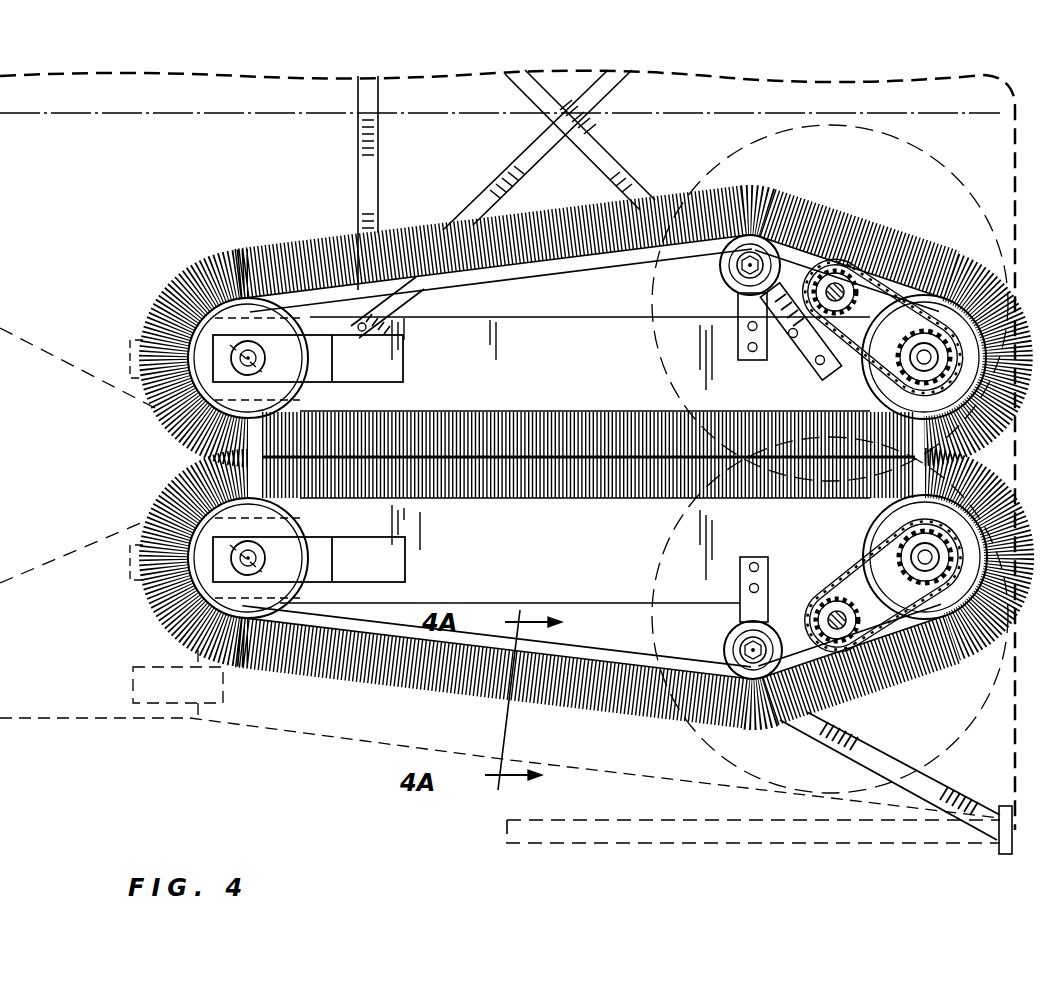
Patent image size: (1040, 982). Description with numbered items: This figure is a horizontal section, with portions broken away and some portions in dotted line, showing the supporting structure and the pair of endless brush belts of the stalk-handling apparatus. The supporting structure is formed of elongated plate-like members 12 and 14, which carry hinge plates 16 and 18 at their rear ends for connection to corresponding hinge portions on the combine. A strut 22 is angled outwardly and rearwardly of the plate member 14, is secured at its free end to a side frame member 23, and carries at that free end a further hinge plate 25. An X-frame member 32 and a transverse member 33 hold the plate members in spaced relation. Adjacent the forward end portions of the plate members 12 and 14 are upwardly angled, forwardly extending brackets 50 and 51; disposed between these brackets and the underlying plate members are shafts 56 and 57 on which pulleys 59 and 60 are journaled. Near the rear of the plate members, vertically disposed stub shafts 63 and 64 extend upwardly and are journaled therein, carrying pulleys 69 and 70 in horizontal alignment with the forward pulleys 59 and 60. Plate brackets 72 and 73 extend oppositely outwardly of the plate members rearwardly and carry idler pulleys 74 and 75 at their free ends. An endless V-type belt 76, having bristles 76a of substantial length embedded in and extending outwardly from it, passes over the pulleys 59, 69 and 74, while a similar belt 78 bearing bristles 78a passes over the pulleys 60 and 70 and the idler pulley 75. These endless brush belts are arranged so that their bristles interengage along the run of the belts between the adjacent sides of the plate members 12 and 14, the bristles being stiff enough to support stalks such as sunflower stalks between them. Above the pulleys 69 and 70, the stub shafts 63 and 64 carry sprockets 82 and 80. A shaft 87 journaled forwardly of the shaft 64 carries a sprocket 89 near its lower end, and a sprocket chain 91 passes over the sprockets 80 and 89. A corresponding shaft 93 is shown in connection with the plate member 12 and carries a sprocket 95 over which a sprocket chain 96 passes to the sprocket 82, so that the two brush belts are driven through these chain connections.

The plate-like member 12 is at (538, 380).
The plate-like member 14 is at (543, 548).
The hinge plate 16 is at (830, 303).
The hinge plate 18 is at (835, 615).
The strut 22 is at (918, 785).
The side frame member 23 is at (757, 843).
The hinge plate 25 is at (1012, 856).
The X-frame member 32 is at (540, 149).
The transverse member 33 is at (357, 165).
The bracket 50 is at (404, 365).
The bracket 51 is at (407, 567).
The shaft 56 is at (165, 335).
The shaft 57 is at (186, 515).
The pulley 59 is at (196, 280).
The pulley 60 is at (205, 585).
The stub shaft 63 is at (905, 366).
The stub shaft 64 is at (920, 553).
The pulley 69 is at (962, 262).
The pulley 70 is at (995, 648).
The plate bracket 72 is at (738, 345).
The plate bracket 73 is at (740, 580).
The idler pulley 74 is at (720, 276).
The idler pulley 75 is at (730, 641).
The endless V-type belt 76 is at (583, 267).
The bristles 76a is at (570, 228).
The belt 78 is at (598, 705).
The bristles 78a is at (437, 683).
The sprocket 80 is at (870, 566).
The sprocket 82 is at (918, 290).
The shaft 87 is at (830, 610).
The sprocket 89 is at (848, 660).
The sprocket chain 91 is at (905, 652).
The shaft 93 is at (830, 270).
The sprocket 95 is at (866, 264).
The sprocket chain 96 is at (801, 356).